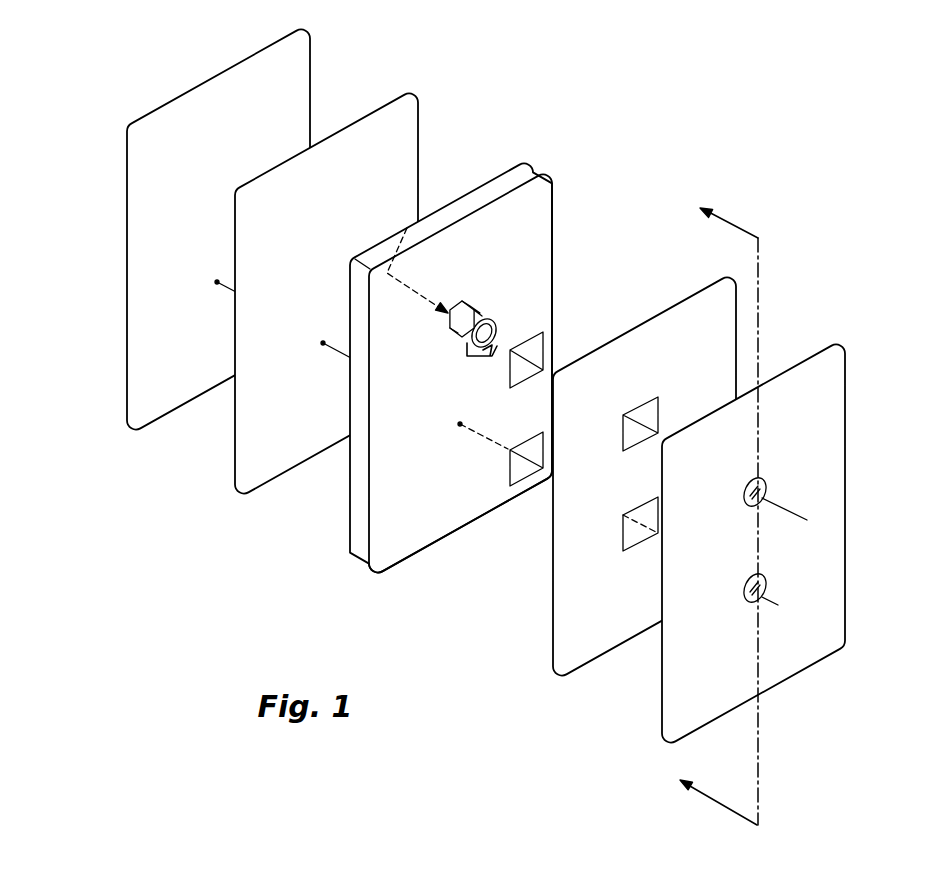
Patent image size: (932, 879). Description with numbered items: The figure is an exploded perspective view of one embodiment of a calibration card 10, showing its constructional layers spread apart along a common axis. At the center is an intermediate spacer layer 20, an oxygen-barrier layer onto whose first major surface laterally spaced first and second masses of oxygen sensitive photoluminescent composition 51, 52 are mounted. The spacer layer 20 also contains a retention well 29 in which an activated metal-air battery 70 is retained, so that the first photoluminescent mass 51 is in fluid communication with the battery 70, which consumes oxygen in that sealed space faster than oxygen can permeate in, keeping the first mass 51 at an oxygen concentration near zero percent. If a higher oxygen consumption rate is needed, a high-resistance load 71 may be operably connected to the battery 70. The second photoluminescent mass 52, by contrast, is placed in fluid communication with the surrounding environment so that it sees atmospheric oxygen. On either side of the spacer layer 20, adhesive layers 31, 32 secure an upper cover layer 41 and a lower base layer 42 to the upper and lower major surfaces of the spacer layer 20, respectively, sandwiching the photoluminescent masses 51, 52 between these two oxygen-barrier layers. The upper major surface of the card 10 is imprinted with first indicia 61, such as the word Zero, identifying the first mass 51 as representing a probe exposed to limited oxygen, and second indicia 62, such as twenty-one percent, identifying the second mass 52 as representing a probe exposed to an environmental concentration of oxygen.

The calibration card 10 is at (486, 427).
The intermediate spacer layer 20 is at (450, 334).
The retention well 29 is at (407, 228).
The adhesive layer 31 is at (570, 630).
The adhesive layer 32 is at (250, 447).
The upper cover layer 41 is at (756, 543).
The lower base layer 42 is at (145, 383).
The first mass of oxygen sensitive photoluminescent composition 51 is at (541, 348).
The second mass of oxygen sensitive photoluminescent composition 52 is at (530, 473).
The first indicia 61 is at (788, 437).
The second indicia 62 is at (788, 620).
The activated metal-air battery 70 is at (487, 313).
The load 71 is at (493, 347).